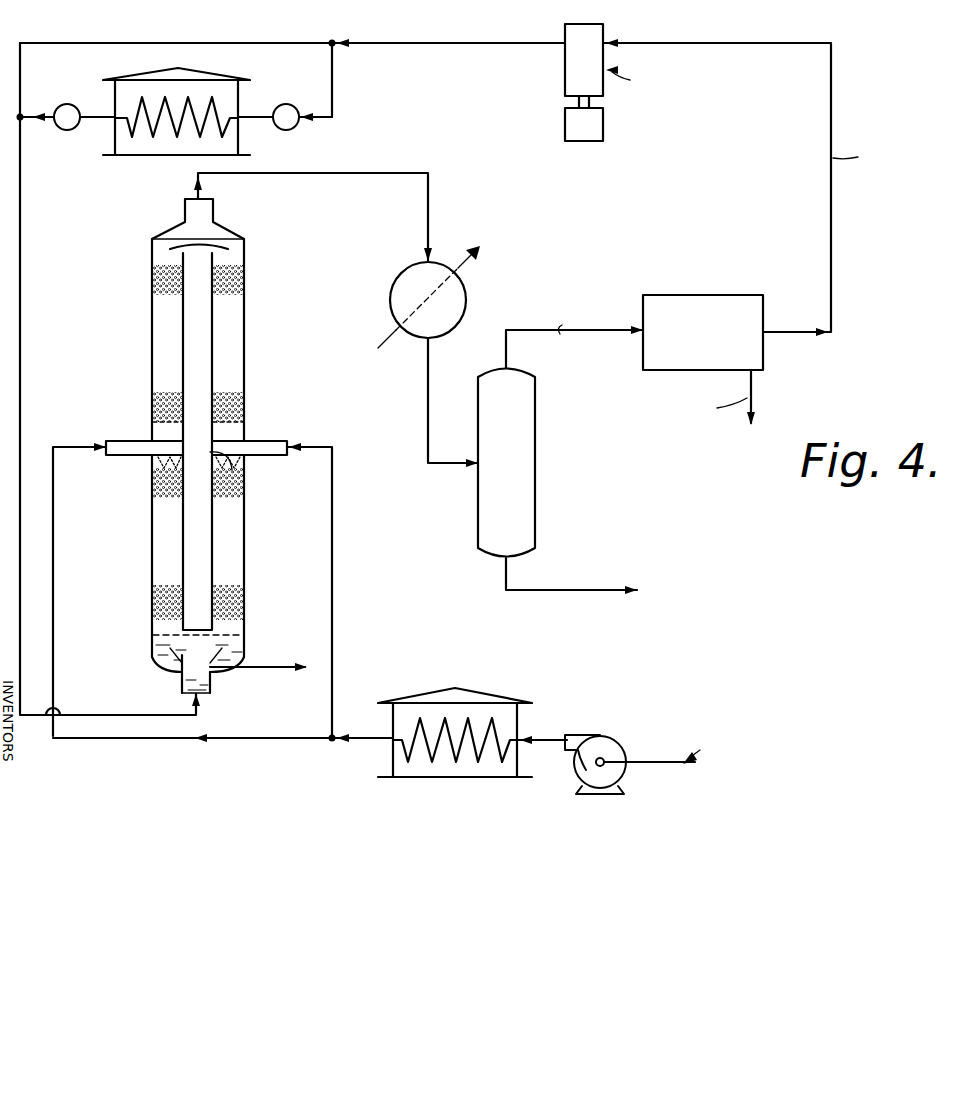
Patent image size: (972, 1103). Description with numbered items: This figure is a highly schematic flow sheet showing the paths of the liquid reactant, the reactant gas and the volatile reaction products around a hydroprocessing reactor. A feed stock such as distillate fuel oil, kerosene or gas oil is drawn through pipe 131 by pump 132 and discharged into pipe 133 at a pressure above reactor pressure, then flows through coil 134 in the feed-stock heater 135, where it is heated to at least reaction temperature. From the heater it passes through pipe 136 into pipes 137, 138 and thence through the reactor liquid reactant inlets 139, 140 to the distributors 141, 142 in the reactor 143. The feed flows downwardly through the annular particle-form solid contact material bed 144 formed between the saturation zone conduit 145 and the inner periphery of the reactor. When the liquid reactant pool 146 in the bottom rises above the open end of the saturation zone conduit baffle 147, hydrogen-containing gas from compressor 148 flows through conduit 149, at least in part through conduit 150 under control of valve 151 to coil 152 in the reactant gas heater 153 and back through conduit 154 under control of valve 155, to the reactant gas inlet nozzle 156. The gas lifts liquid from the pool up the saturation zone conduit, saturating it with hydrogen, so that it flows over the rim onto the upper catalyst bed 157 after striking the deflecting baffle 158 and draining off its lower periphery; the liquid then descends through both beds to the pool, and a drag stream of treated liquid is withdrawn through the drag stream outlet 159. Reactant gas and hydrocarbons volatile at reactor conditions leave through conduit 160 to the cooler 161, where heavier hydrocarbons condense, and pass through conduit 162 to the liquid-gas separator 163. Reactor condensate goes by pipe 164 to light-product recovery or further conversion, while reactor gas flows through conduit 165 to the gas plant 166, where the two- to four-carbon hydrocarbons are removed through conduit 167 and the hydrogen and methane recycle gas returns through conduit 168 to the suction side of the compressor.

The pipe 131 is at (660, 760).
The pump 132 is at (608, 748).
The pipe 133 is at (555, 740).
The coil 134 is at (490, 720).
The feed-stock heater 135 is at (433, 690).
The pipe 136 is at (365, 738).
The pipe 137 is at (333, 548).
The pipe 138 is at (53, 580).
The reactor liquid reactant inlet 139 is at (273, 441).
The reactor liquid reactant inlet 140 is at (116, 420).
The distributor 141 is at (233, 452).
The distributor 142 is at (170, 450).
The reactor 143 is at (245, 305).
The annular particle-form solid contact material bed 144 is at (228, 596).
The saturation zone conduit 145 is at (183, 322).
The liquid reactant pool 146 is at (240, 645).
The saturation zone conduit baffle 147 is at (152, 648).
The compressor 148 is at (565, 78).
The conduit 149 is at (403, 47).
The conduit 150 is at (258, 124).
The valve 151 is at (302, 124).
The coil 152 is at (215, 110).
The reactant gas heater 153 is at (195, 68).
The conduit 154 is at (95, 124).
The valve 155 is at (72, 100).
The reactant gas inlet nozzle 156 is at (210, 685).
The upper catalyst bed 157 is at (245, 360).
The deflecting baffle 158 is at (182, 243).
The drag stream outlet 159 is at (285, 670).
The conduit 160 is at (338, 178).
The cooler 161 is at (408, 278).
The conduit 162 is at (425, 392).
The liquid-gas separator 163 is at (537, 496).
The pipe 164 is at (586, 592).
The conduit 165 is at (588, 333).
The gas plant 166 is at (712, 295).
The conduit 167 is at (752, 385).
The conduit 168 is at (833, 260).